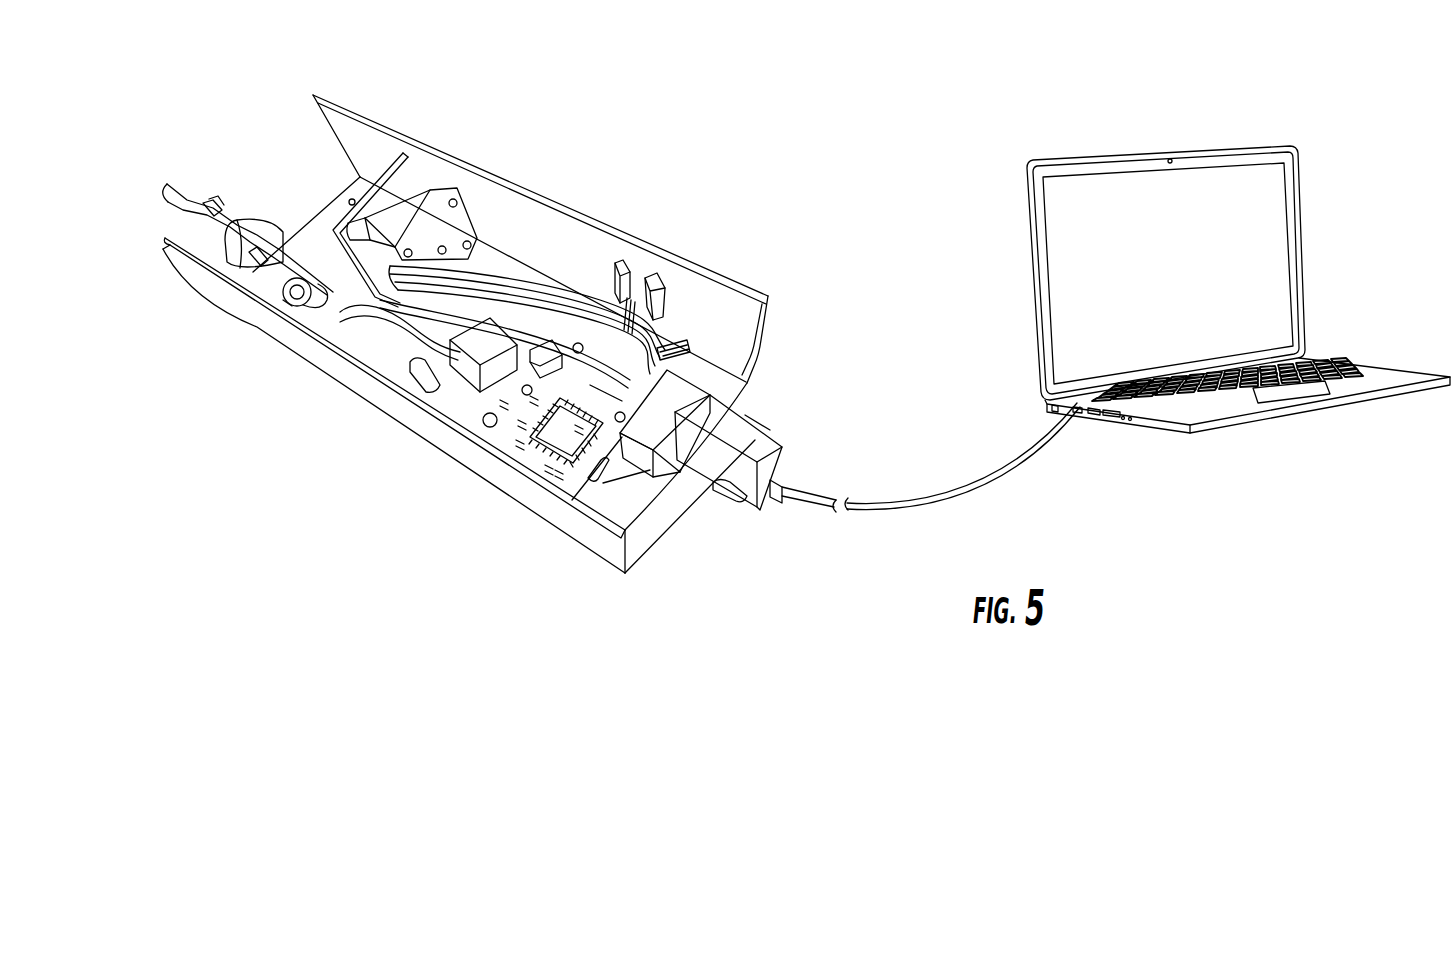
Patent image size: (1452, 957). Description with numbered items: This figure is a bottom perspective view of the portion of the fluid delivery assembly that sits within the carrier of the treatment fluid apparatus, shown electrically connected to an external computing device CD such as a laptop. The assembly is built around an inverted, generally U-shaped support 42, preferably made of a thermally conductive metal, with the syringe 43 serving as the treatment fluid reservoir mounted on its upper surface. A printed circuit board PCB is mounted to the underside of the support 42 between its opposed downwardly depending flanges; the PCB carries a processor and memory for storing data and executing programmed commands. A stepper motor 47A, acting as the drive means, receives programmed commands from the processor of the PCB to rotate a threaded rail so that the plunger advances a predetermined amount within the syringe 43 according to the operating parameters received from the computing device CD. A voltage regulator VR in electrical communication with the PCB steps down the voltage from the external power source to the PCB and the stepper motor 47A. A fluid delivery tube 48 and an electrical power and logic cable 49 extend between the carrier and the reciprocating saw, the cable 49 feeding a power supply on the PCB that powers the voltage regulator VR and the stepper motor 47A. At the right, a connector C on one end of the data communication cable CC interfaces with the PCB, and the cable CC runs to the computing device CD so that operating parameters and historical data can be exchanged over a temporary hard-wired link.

The support 42 is at (442, 450).
The syringe 43 is at (273, 220).
The stepper motor 47A is at (408, 197).
The fluid delivery tube 48 is at (196, 198).
The electrical power and logic cable 49 is at (197, 220).
The voltage regulator VR is at (640, 277).
The printed circuit board PCB is at (632, 473).
The connector C is at (748, 416).
The data communication cable CC is at (965, 485).
The computing device CD is at (1298, 229).